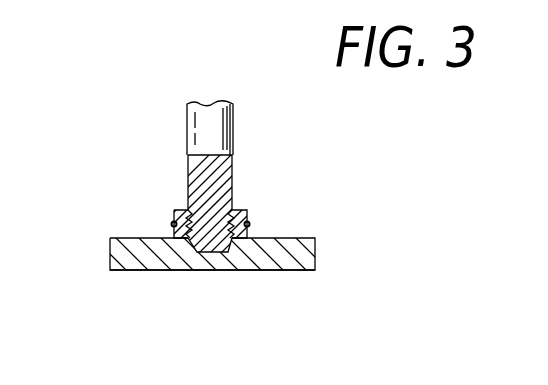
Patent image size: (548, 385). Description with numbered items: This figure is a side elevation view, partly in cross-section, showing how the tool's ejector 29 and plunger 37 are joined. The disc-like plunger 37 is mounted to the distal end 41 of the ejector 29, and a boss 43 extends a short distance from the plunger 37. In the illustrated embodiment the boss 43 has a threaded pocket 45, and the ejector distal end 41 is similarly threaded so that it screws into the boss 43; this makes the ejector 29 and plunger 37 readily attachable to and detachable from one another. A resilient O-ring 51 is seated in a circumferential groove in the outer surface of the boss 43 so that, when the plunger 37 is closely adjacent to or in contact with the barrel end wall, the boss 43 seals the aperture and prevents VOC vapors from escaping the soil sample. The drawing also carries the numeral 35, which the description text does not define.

The ejector 29 is at (233, 120).
The plate 35 is at (315, 257).
The plunger 37 is at (247, 270).
The distal end 41 is at (233, 178).
The boss 43 is at (250, 229).
The threaded pocket 45 is at (190, 210).
The O-ring 51 is at (171, 223).